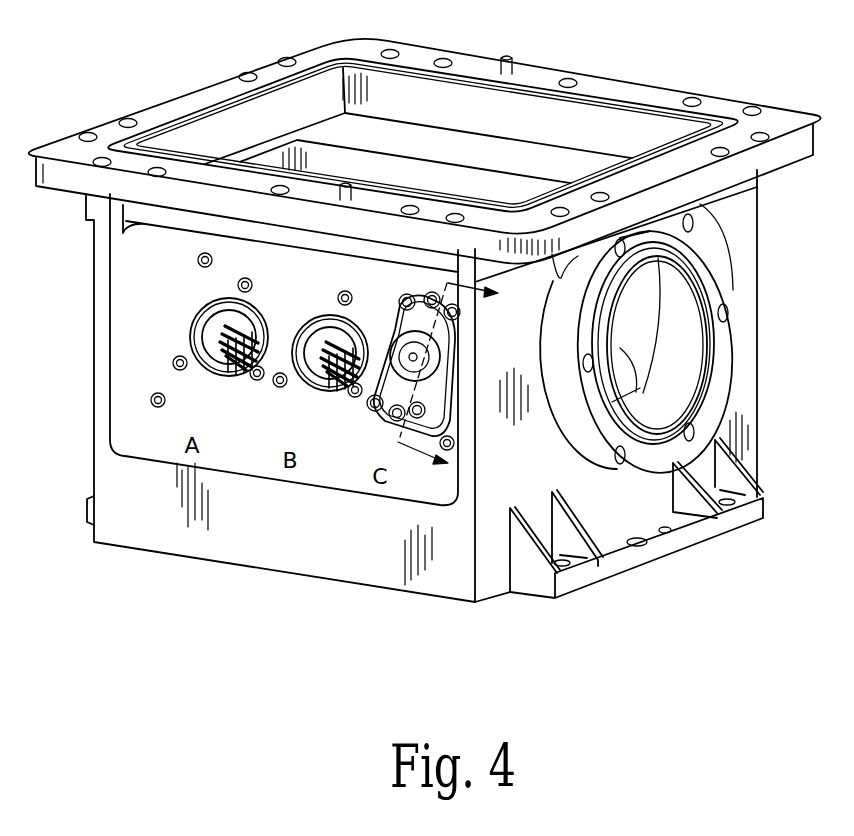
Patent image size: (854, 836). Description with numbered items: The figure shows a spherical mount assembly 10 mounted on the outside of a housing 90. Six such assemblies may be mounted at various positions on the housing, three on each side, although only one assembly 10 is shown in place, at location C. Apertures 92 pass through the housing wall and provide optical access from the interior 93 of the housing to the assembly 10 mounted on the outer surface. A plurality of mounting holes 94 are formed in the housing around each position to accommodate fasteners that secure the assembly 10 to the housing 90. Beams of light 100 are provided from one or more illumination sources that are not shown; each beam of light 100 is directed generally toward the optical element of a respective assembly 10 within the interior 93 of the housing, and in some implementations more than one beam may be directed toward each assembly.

The housing 90 is at (188, 97).
The apertures 92 is at (223, 322).
The mounting holes 94 is at (247, 283).
The spherical mount assembly 10 is at (397, 333).
The beams of light 100 is at (223, 347).
The interior 93 is at (641, 332).